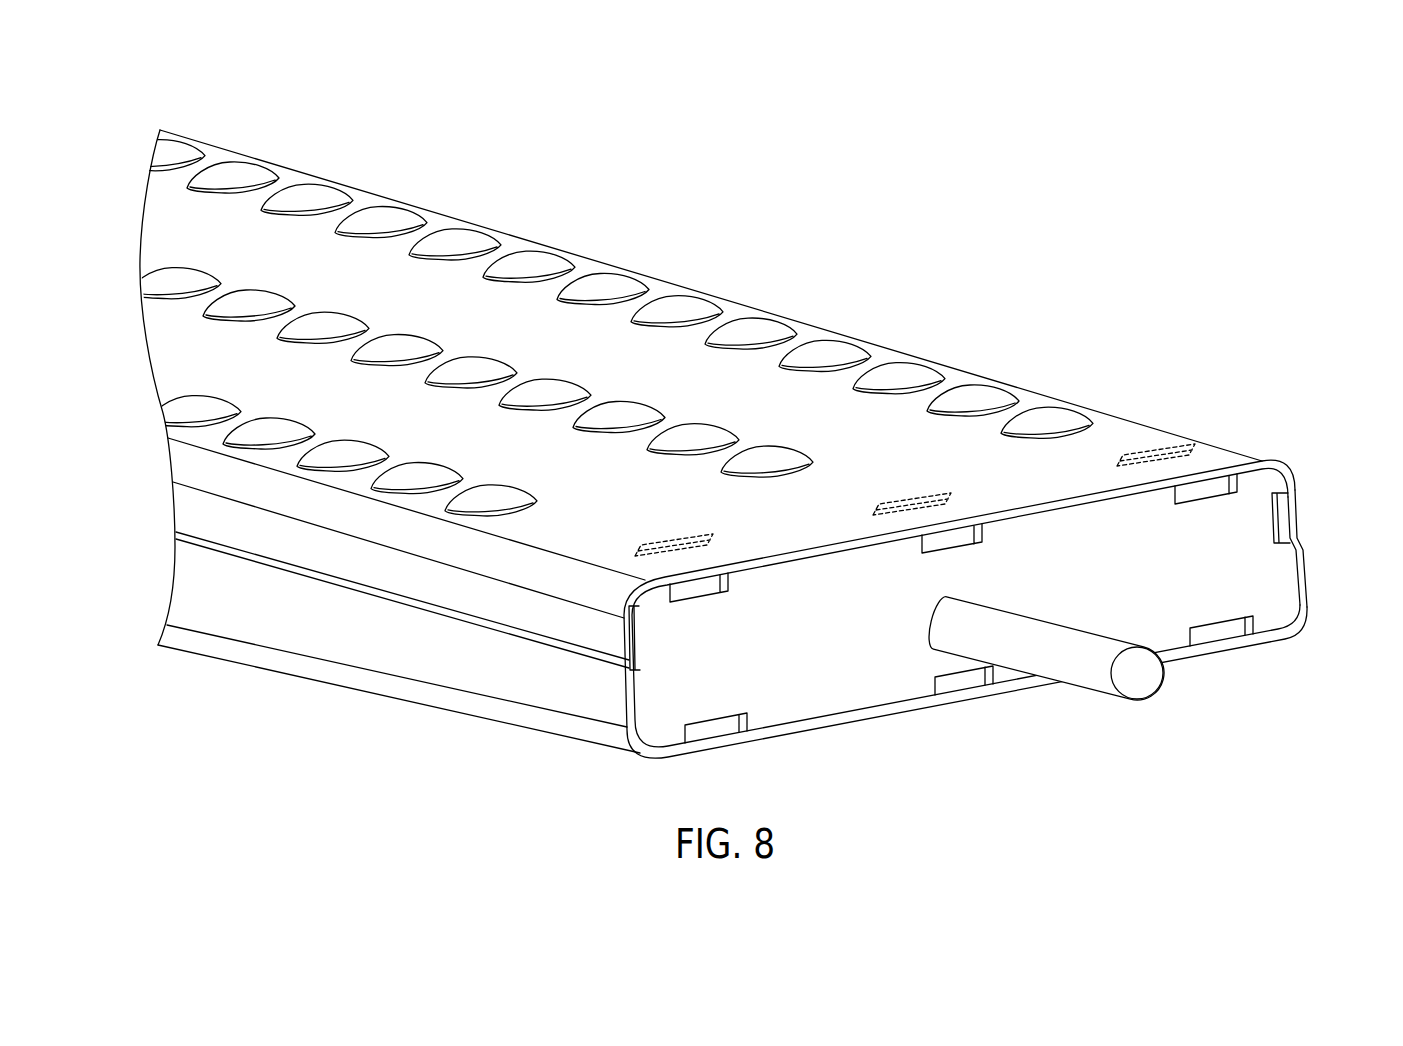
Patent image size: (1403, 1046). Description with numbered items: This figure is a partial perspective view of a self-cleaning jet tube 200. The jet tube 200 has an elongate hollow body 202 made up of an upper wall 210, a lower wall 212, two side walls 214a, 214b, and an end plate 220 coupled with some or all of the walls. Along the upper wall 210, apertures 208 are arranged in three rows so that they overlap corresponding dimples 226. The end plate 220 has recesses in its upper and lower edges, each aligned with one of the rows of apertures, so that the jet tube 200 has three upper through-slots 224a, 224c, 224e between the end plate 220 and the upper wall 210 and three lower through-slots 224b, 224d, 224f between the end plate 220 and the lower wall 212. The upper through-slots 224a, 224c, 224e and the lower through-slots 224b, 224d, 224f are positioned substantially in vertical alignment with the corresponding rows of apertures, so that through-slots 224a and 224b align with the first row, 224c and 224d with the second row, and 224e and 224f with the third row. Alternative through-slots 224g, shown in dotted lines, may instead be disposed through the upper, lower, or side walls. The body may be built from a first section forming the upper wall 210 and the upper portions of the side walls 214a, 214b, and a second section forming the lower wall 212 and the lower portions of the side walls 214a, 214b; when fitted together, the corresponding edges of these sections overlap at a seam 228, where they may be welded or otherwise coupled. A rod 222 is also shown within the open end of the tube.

The jet tube 200 is at (743, 437).
The elongate hollow body 202 is at (524, 226).
The apertures 208 is at (885, 351).
The upper wall 210 is at (603, 328).
The lower wall 212 is at (1020, 687).
The side wall 214a is at (315, 625).
The side wall 214b is at (1300, 565).
The end plate 220 is at (1147, 618).
The rod 222 is at (1087, 677).
The through-slot 224a is at (698, 588).
The through-slot 224b is at (708, 723).
The through-slot 224c is at (943, 545).
The through-slot 224d is at (975, 670).
The through-slot 224e is at (1194, 494).
The through-slot 224f is at (1236, 624).
The alternative through-slots 224g is at (651, 541).
The dimples 226 is at (912, 372).
The seam 228 is at (630, 645).